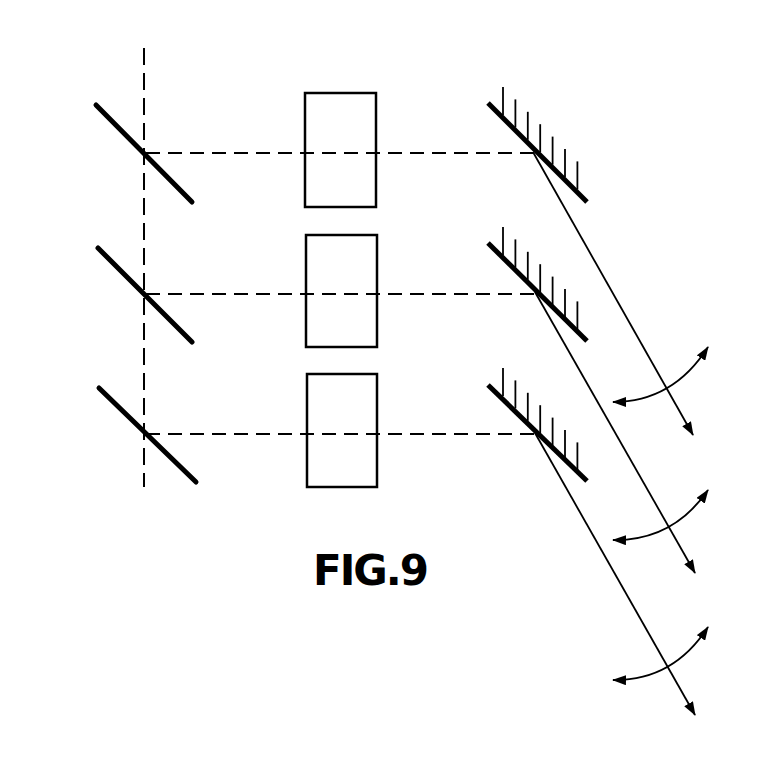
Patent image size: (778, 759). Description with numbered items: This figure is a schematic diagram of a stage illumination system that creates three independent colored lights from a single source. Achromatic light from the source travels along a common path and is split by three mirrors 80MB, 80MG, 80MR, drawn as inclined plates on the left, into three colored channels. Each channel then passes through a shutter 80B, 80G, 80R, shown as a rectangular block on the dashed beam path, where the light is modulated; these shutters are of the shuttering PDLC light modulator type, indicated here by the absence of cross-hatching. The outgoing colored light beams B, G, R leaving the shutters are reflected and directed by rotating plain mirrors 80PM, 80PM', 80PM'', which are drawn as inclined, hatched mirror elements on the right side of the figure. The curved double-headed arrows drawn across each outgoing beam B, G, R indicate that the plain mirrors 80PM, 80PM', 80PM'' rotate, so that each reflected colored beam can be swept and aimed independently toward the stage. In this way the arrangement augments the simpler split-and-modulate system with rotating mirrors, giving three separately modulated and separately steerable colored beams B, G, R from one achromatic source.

The mirror 80MB is at (113, 133).
The mirror 80MG is at (118, 278).
The mirror 80MR is at (130, 428).
The shutter 80B is at (291, 137).
The shutter 80G is at (302, 279).
The shutter 80R is at (297, 420).
The rotating plain mirror 80PM is at (490, 127).
The rotating plain mirror 80PM' is at (490, 266).
The rotating plain mirror 80PM'' is at (490, 397).
The outgoing colored light beam B is at (625, 296).
The outgoing colored light beam G is at (628, 440).
The outgoing colored light beam R is at (625, 580).